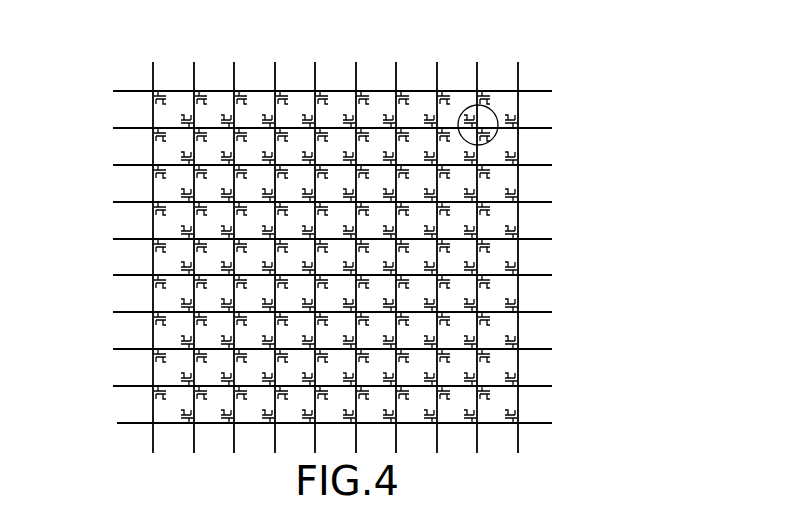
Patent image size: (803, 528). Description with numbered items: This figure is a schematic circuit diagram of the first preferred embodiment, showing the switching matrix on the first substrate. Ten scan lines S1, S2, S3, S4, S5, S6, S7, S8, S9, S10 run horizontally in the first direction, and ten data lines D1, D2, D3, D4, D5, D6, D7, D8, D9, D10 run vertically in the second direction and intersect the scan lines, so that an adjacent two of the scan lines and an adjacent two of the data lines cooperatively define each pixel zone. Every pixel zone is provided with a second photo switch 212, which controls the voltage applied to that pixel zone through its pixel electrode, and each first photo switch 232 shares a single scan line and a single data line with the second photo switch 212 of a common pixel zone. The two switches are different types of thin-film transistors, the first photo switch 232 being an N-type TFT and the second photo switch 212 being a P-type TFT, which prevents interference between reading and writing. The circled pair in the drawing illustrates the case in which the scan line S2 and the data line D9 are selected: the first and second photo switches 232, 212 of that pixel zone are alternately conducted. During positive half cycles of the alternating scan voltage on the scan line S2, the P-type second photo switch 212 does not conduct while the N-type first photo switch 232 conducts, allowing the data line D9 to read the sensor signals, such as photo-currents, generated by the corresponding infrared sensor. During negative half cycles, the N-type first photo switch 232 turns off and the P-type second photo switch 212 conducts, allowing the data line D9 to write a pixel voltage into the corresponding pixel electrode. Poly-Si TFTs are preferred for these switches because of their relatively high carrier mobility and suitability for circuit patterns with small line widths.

The second photo switch 212 is at (496, 136).
The first photo switch 232 is at (479, 109).
The data line D1 is at (153, 245).
The data line D2 is at (194, 245).
The data line D3 is at (234, 245).
The data line D4 is at (275, 245).
The data line D5 is at (315, 245).
The data line D6 is at (356, 245).
The data line D7 is at (396, 245).
The data line D8 is at (437, 245).
The data line D9 is at (476, 245).
The data line D10 is at (520, 246).
The scan line S1 is at (317, 92).
The scan line S2 is at (317, 129).
The scan line S3 is at (317, 166).
The scan line S4 is at (317, 203).
The scan line S5 is at (317, 240).
The scan line S6 is at (317, 276).
The scan line S7 is at (317, 313).
The scan line S8 is at (317, 350).
The scan line S9 is at (317, 387).
The scan line S10 is at (317, 424).